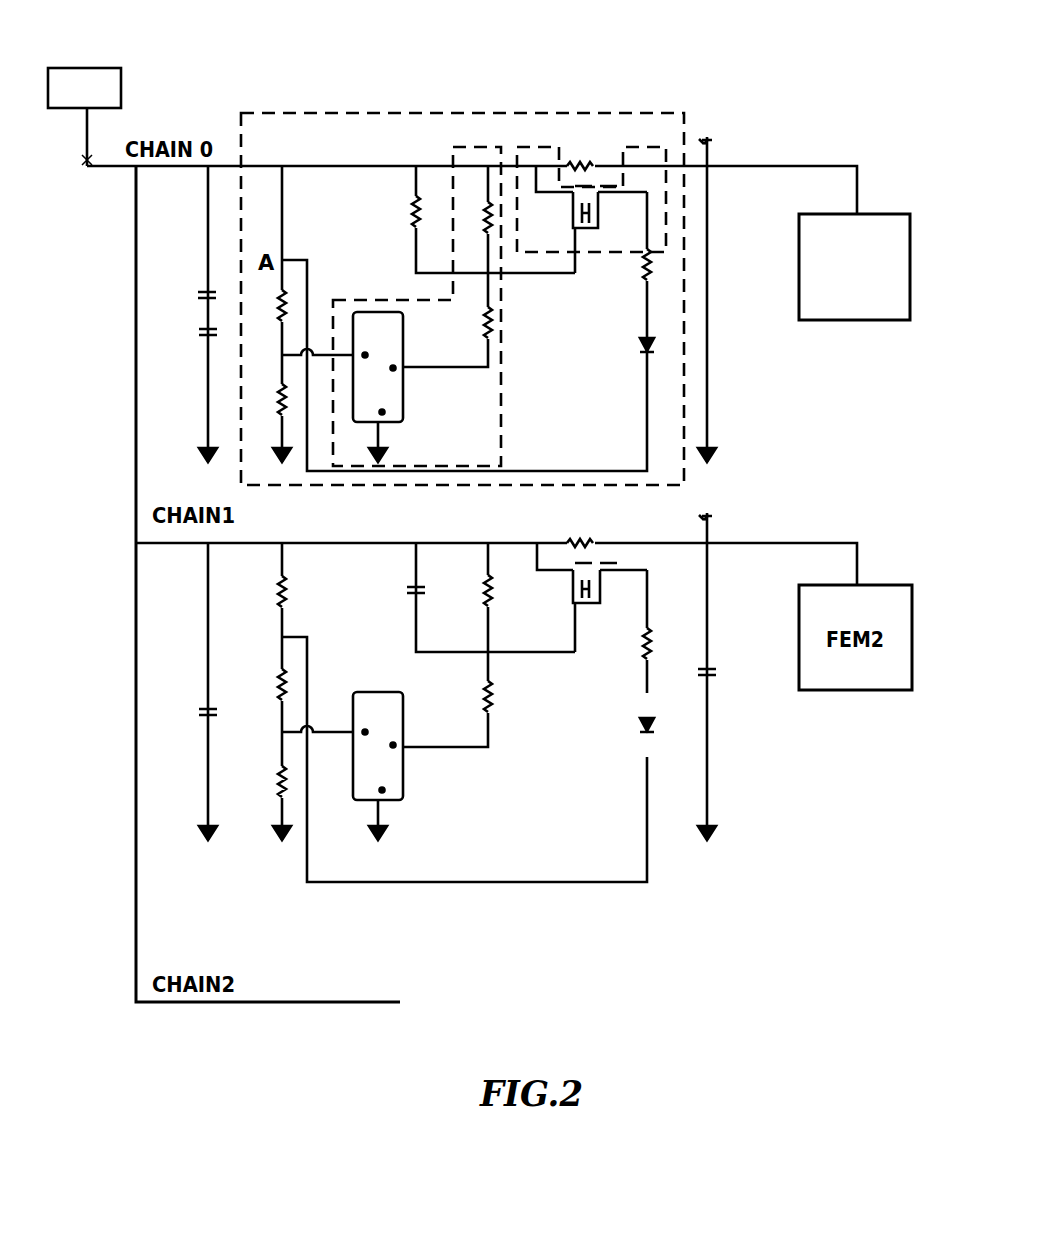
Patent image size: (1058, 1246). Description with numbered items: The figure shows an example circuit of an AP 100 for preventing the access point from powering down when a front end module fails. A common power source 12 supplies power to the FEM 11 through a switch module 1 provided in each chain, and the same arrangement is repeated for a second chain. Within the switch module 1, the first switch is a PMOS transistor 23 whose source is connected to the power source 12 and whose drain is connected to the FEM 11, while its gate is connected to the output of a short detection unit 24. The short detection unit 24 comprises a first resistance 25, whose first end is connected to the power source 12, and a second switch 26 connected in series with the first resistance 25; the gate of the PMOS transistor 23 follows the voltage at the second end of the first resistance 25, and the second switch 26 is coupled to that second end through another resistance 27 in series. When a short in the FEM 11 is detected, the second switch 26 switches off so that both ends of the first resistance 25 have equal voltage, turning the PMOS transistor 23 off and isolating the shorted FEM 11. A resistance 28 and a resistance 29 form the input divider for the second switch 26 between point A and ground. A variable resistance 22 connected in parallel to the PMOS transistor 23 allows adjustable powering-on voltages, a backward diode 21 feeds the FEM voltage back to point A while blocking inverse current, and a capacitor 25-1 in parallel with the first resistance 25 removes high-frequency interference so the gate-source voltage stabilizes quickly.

The AP 100 is at (388, 43).
The common power source 12 is at (115, 68).
The FEM 11 is at (888, 212).
The switch module 1 is at (432, 113).
The resistance 22 is at (578, 163).
The PMOS transistor 23 is at (656, 147).
The backward diode 21 is at (645, 350).
The capacitor 25-1 is at (414, 212).
The first resistance 25 is at (480, 204).
The resistance 27 is at (490, 320).
The short detection unit 24 is at (503, 410).
The second switch 26 is at (395, 411).
The resistance 28 is at (277, 305).
The resistance 29 is at (277, 405).